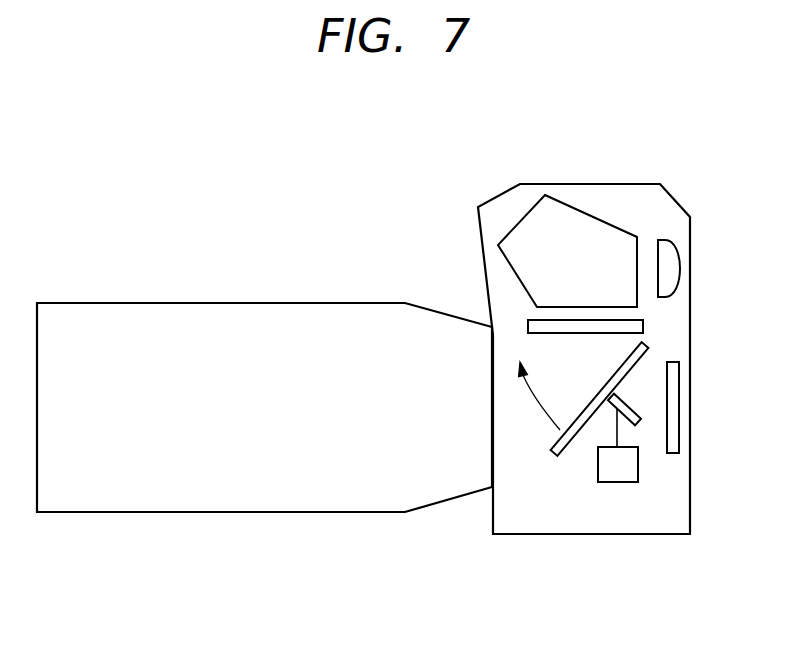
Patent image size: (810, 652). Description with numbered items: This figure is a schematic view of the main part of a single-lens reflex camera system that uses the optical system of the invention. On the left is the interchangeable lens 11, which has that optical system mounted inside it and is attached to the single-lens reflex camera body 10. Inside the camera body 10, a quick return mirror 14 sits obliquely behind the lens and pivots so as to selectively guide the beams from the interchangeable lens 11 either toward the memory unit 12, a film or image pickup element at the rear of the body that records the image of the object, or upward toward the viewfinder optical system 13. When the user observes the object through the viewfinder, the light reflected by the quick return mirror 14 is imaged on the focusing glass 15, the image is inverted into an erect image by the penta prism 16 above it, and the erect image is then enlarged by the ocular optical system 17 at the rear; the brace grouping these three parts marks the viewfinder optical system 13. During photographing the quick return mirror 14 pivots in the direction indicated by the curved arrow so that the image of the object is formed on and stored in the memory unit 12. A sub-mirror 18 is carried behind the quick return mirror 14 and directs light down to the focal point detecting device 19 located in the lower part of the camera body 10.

The single-lens reflex camera body 10 is at (662, 515).
The interchangeable lens 11 is at (263, 495).
The memory unit 12 is at (675, 438).
The viewfinder optical system 13 is at (483, 130).
The quick return mirror 14 is at (567, 443).
The focusing glass 15 is at (550, 322).
The penta prism 16 is at (594, 233).
The ocular optical system 17 is at (670, 248).
The sub-mirror 18 is at (625, 402).
The focal point detecting device 19 is at (612, 472).